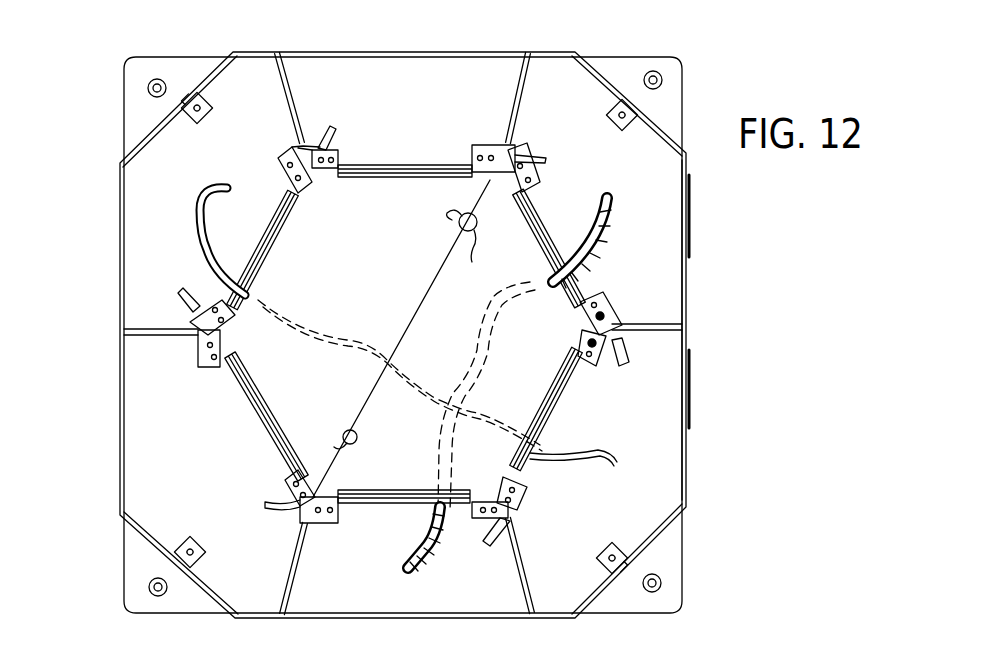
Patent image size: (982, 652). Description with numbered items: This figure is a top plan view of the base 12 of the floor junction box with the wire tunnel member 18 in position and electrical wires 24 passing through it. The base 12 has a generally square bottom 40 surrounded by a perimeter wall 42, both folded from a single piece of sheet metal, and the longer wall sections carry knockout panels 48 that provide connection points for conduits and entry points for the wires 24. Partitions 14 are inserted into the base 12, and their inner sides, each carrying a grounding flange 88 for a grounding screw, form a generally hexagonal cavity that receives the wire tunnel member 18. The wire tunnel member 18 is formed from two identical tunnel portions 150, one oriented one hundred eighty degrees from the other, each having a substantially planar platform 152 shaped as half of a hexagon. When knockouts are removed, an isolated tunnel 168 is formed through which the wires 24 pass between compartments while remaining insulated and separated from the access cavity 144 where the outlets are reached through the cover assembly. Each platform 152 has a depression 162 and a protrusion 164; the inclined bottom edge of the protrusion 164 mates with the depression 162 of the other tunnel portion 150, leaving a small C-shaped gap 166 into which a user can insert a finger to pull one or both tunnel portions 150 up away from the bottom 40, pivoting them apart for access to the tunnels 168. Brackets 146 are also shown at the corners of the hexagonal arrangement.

The base 12 is at (116, 110).
The partitions 14 is at (297, 84).
The wire tunnel member 18 is at (280, 379).
The electrical wires 24 is at (195, 210).
The bottom 40 is at (632, 426).
The perimeter wall 42 is at (694, 490).
The knockout panels 48 is at (690, 395).
The grounding flange 88 is at (328, 130).
The access cavity 144 is at (388, 203).
The brackets 146 is at (403, 344).
The tunnel portions 150 is at (500, 240).
The platform 152 is at (372, 260).
The depression 162 is at (346, 431).
The protrusion 164 is at (458, 226).
The C-shaped gap 166 is at (358, 445).
The tunnel 168 is at (268, 280).